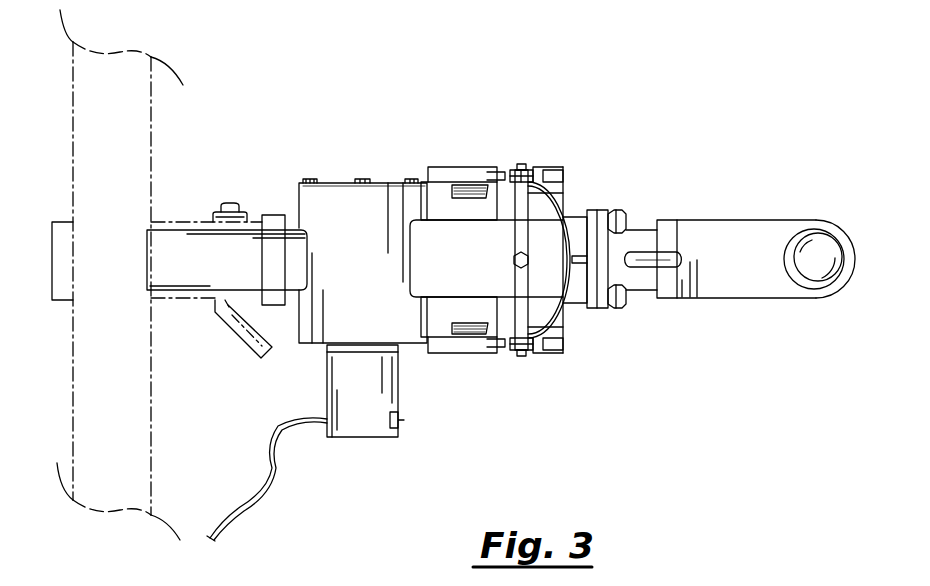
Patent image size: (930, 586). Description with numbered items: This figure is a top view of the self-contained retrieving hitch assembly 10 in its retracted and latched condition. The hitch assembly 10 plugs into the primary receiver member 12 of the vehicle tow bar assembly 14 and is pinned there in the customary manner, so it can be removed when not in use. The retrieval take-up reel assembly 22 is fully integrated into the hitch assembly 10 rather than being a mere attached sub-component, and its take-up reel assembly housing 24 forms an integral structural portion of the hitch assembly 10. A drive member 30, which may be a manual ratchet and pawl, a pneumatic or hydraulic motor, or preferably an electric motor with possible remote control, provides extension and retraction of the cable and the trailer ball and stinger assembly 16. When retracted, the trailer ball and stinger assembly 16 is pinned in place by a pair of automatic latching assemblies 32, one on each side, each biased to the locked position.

The retrieving hitch assembly 10 is at (490, 114).
The primary receiver member 12 is at (278, 200).
The vehicle tow bar assembly 14 is at (168, 126).
The trailer ball and stinger assembly 16 is at (732, 190).
The retrieval take-up reel assembly 22 is at (362, 280).
The take-up reel assembly housing 24 is at (337, 200).
The drive member 30 is at (358, 425).
The latching assemblies 32 is at (555, 148).